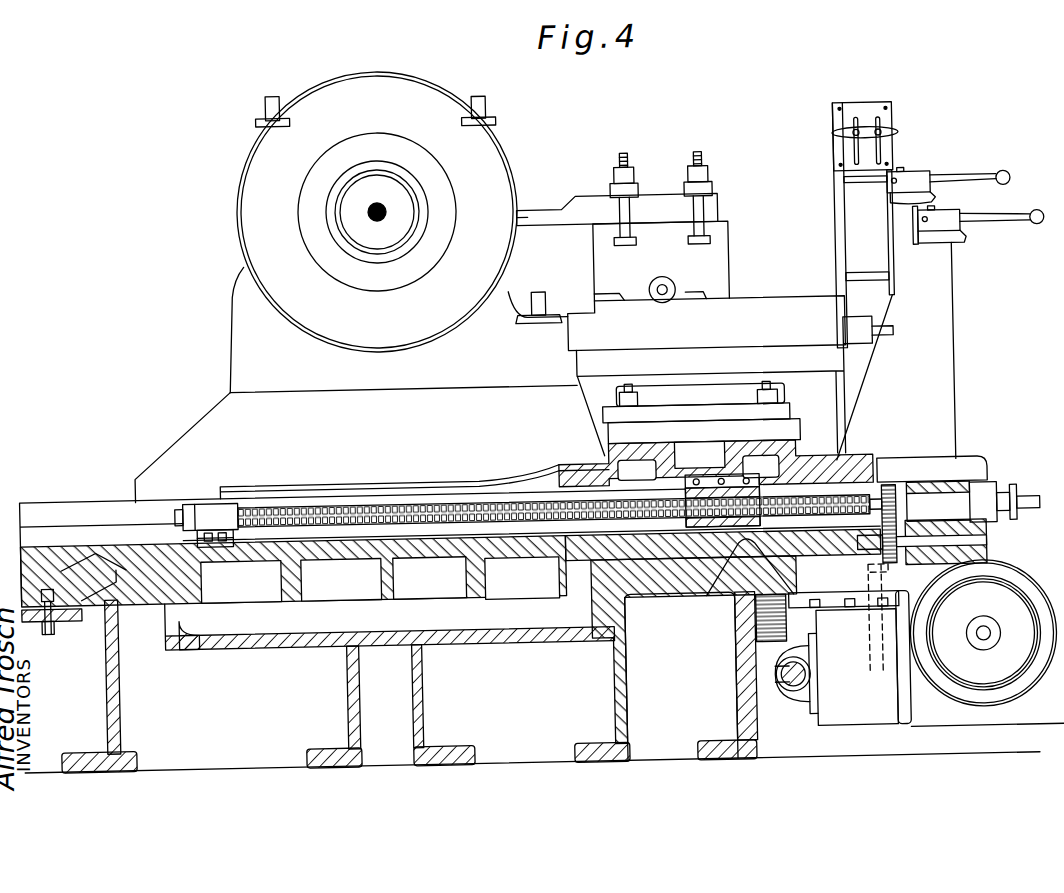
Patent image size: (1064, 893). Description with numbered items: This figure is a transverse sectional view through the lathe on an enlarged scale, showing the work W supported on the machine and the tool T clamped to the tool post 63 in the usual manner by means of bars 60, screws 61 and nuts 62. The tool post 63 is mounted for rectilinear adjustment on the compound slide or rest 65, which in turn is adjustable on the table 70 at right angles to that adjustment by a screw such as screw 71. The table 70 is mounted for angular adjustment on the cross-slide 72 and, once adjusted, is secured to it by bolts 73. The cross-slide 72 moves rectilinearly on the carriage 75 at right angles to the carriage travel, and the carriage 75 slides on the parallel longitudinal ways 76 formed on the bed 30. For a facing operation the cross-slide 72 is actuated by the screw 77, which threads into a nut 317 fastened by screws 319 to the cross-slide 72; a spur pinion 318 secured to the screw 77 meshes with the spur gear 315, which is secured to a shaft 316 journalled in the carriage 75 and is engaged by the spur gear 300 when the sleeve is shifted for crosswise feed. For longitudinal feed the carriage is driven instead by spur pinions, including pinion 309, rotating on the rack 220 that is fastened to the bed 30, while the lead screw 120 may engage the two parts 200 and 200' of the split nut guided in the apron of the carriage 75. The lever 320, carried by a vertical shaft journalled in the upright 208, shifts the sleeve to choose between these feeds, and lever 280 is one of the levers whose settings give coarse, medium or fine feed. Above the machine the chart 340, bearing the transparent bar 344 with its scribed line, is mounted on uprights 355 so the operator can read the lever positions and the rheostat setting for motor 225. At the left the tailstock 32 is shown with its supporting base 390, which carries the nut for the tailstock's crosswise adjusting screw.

The work W is at (441, 80).
The tool T is at (540, 205).
The tailstock 32 is at (236, 281).
The supporting base 390 is at (208, 411).
The bar 60 is at (683, 198).
The screw 61 is at (710, 160).
The nut 62 is at (718, 180).
The tool post 63 is at (741, 268).
The compound slide 65 is at (792, 288).
The upright 355 is at (845, 238).
The chart 340 is at (912, 134).
The transparent bar 344 is at (846, 141).
The lever 320 is at (972, 186).
The lever 280 is at (1008, 232).
The upright 208 is at (968, 356).
The screw 71 is at (896, 340).
The table 70 is at (786, 378).
The bolt 73 is at (765, 403).
The cross-slide 72 is at (811, 471).
The carriage 75 is at (125, 545).
The way 76 is at (85, 555).
The screw 77 is at (468, 510).
The screw 319 is at (687, 491).
The nut 317 is at (686, 527).
The spur gear 315 is at (898, 541).
The spur pinion 318 is at (893, 492).
The shaft 316 is at (995, 551).
The bed 30 is at (755, 748).
The rack 220 is at (735, 607).
The split nut part 200 is at (936, 657).
The spur pinion 309 is at (754, 634).
The lead screw 120 is at (809, 681).
The split nut part 200' is at (791, 687).
The spur gear 300 is at (866, 585).
The motor 225 is at (992, 715).